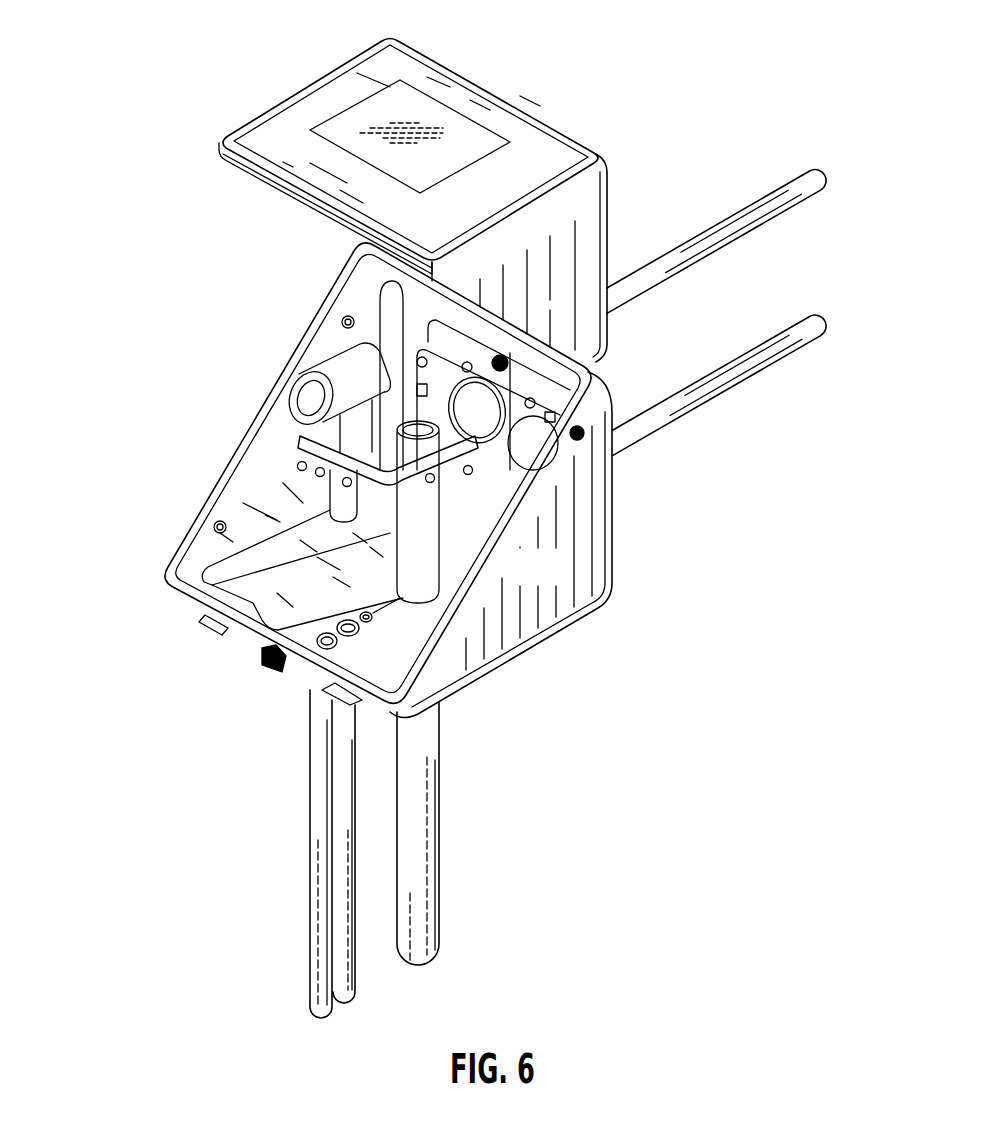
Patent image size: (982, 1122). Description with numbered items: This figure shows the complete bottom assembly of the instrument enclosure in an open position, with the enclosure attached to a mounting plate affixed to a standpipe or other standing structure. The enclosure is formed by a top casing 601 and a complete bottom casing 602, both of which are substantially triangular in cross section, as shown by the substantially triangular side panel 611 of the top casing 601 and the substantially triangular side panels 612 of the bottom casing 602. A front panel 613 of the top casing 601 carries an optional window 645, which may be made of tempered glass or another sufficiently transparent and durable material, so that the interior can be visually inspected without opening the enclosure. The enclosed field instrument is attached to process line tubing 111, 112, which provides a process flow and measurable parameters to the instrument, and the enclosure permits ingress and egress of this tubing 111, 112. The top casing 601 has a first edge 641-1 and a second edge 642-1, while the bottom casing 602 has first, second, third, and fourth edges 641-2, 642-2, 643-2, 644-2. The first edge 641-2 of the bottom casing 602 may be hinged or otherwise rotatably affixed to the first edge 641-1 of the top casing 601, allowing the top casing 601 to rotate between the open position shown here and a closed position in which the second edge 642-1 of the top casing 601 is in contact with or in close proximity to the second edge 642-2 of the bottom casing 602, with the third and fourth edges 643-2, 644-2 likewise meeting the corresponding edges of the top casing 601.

The process line tubing 111 is at (799, 206).
The process line tubing 112 is at (805, 350).
The top casing 601 is at (559, 155).
The bottom casing 602 is at (128, 447).
The side panel 611 is at (548, 278).
The side panels 612 is at (558, 586).
The front panel 613 is at (264, 118).
The first edge 641-1 is at (590, 372).
The first edge 641-2 is at (424, 228).
The second edge 642-1 is at (270, 183).
The second edge 642-2 is at (250, 640).
The third edge 643-2 is at (263, 398).
The fourth edge 644-2 is at (523, 497).
The window 645 is at (443, 118).